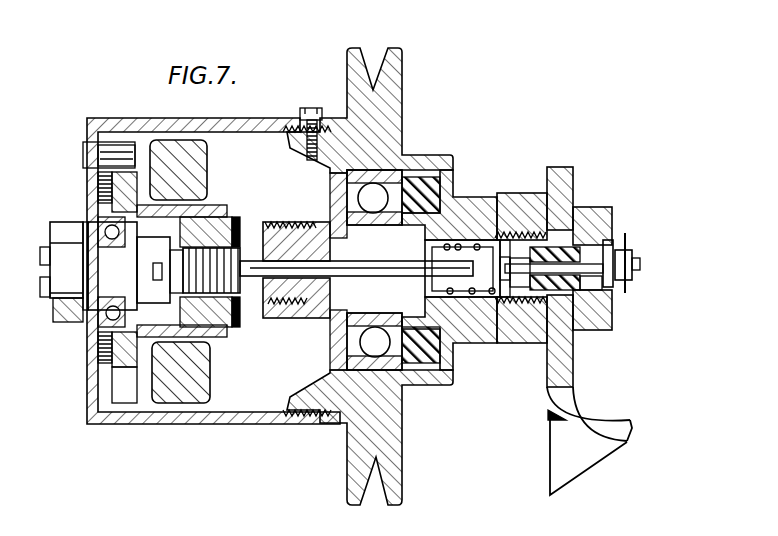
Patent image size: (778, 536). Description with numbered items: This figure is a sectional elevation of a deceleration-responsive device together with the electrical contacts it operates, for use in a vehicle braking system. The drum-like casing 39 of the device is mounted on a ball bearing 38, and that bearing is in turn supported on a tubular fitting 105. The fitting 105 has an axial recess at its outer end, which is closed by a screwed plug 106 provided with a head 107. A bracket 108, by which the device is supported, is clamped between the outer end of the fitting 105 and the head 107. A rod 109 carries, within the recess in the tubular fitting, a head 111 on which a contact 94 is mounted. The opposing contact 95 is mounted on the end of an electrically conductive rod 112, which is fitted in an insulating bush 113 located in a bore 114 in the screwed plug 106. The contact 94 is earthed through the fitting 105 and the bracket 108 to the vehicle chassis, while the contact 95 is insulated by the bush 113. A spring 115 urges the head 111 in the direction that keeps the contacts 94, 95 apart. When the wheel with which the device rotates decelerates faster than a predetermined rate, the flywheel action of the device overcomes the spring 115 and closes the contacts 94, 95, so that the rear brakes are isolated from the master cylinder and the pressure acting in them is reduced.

The ball bearing 38 is at (403, 153).
The drum-like casing 39 is at (347, 98).
The contact 94 is at (473, 296).
The contact 95 is at (522, 278).
The tubular fitting 105 is at (520, 212).
The screwed plug 106 is at (540, 230).
The head 107 is at (597, 207).
The bracket 108 is at (557, 387).
The rod 109 is at (272, 298).
The head 111 is at (488, 243).
The electrically conductive rod 112 is at (611, 290).
The insulating bush 113 is at (593, 302).
The bore 114 is at (566, 286).
The spring 115 is at (470, 296).